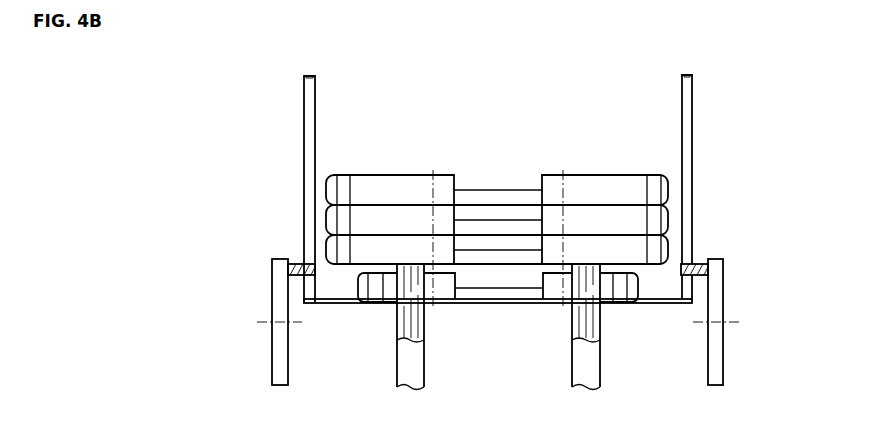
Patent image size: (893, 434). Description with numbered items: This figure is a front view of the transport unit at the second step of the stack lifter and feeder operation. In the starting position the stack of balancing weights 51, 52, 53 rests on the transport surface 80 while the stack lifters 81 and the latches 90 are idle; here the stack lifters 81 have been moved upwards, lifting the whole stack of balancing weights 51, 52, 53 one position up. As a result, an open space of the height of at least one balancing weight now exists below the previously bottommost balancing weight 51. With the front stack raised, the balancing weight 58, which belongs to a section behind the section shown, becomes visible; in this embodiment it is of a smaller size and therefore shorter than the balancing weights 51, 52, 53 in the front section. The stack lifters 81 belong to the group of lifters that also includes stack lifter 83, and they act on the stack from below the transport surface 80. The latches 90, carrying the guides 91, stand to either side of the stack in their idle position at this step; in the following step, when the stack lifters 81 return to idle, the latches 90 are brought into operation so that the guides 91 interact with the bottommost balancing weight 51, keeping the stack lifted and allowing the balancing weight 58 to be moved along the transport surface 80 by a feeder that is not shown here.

The balancing weight 51 is at (603, 250).
The balancing weight 52 is at (578, 223).
The balancing weight 53 is at (552, 190).
The balancing weight 58 is at (617, 288).
The transport surface 80 is at (627, 304).
The stack lifter 81 is at (410, 328).
The stack lifter 83 is at (687, 160).
The latch 90 is at (280, 293).
The guide 91 is at (299, 262).